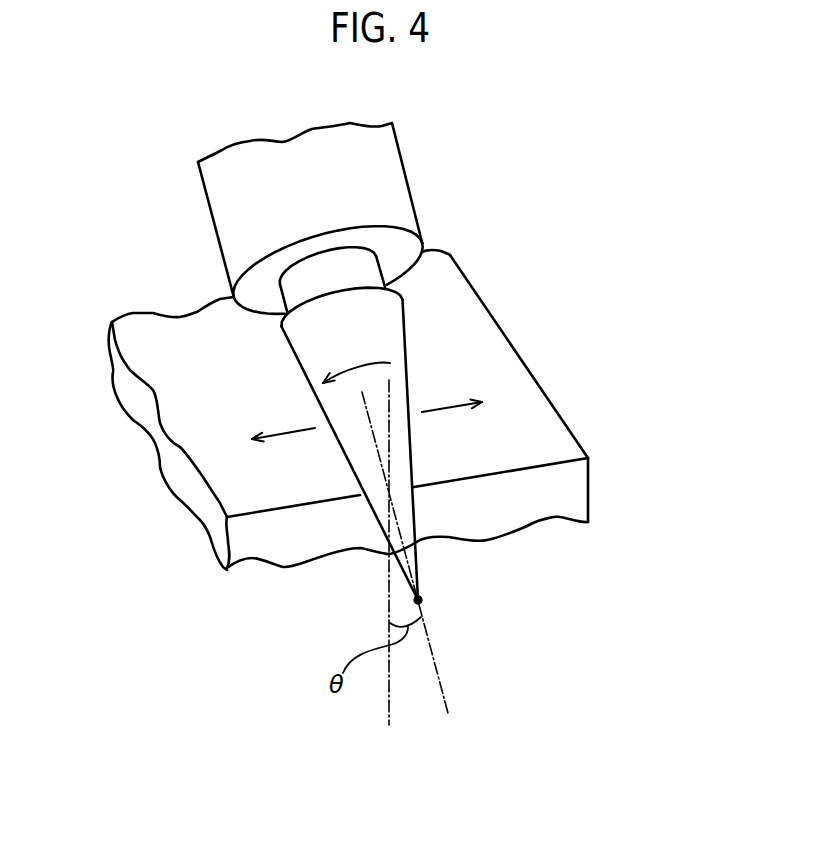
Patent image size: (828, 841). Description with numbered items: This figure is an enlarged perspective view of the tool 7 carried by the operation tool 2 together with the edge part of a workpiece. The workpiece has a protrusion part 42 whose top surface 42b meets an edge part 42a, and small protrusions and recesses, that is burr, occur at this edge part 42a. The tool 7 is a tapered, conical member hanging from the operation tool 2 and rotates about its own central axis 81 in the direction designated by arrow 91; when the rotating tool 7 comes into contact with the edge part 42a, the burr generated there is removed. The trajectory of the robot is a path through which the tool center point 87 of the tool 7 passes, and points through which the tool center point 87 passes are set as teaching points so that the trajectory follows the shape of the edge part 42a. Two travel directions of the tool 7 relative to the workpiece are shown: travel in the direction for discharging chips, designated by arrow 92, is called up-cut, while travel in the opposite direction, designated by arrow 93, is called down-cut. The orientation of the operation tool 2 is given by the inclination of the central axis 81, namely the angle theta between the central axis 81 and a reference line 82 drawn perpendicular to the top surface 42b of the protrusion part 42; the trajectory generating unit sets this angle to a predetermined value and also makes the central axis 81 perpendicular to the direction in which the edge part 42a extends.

The operation tool 2 is at (378, 160).
The tool 7 is at (302, 344).
The protrusion part 42 is at (348, 410).
The edge part 42a is at (555, 464).
The top surface 42b is at (517, 378).
The central axis 81 is at (365, 402).
The reference line 82 is at (388, 711).
The tool center point 87 is at (422, 600).
The arrow 91 is at (365, 362).
The arrow 92 is at (450, 407).
The arrow 93 is at (290, 432).